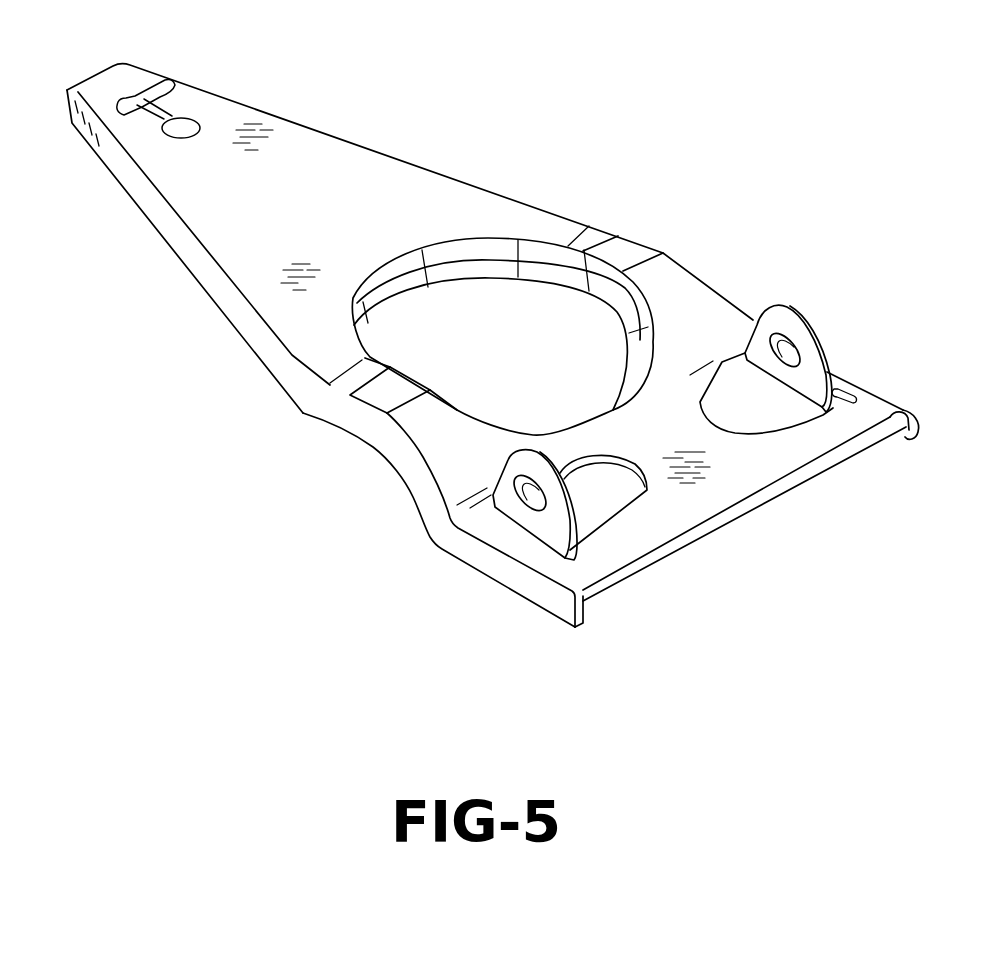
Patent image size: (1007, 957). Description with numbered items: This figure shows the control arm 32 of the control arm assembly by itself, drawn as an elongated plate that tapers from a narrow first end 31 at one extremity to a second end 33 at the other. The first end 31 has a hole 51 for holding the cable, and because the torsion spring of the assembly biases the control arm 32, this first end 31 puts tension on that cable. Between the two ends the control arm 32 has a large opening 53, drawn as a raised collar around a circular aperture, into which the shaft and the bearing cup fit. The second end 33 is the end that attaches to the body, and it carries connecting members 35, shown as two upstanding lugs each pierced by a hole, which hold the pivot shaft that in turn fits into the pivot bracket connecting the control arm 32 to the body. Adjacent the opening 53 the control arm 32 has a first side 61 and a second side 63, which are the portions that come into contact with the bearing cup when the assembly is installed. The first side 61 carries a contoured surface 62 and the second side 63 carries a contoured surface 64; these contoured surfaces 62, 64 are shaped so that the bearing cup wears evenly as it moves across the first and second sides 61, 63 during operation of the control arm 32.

The first end 31 is at (76, 91).
The control arm 32 is at (448, 210).
The second end 33 is at (755, 475).
The connecting members 35 is at (790, 330).
The hole 51 is at (183, 130).
The opening 53 is at (535, 357).
The first side 61 is at (593, 241).
The contoured surface 62 is at (638, 257).
The second side 63 is at (350, 382).
The contoured surface 64 is at (377, 398).